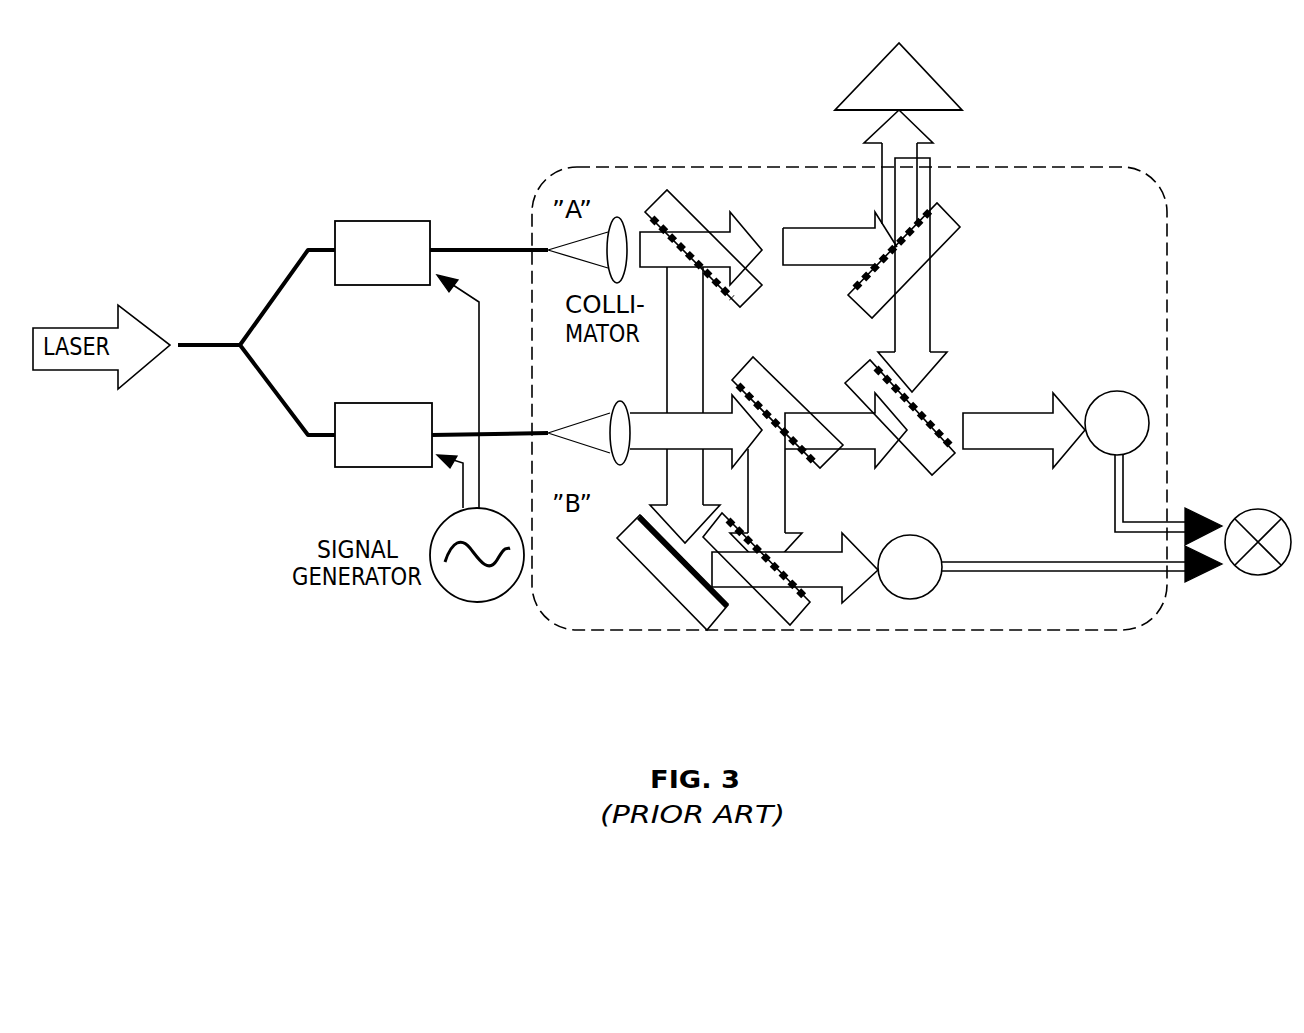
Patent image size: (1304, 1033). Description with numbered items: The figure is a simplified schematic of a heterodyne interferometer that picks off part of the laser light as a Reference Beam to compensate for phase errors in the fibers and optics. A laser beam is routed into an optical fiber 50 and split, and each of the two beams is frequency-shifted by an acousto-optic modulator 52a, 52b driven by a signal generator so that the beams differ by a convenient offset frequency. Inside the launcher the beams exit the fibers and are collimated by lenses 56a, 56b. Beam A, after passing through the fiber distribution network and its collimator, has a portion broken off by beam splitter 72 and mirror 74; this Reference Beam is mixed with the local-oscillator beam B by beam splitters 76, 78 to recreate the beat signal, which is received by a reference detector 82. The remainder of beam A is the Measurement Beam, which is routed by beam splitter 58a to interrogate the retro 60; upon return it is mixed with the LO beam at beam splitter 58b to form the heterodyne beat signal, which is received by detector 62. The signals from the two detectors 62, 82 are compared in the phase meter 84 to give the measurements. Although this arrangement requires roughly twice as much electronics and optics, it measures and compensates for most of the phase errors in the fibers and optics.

The optical fiber 50 is at (200, 343).
The acousto-optic modulator 52a is at (380, 220).
The acousto-optic modulator 52b is at (380, 402).
The lens 56a is at (615, 217).
The lens 56b is at (617, 401).
The beam splitter 58a is at (950, 216).
The beam splitter 58b is at (925, 410).
The retro 60 is at (920, 63).
The detector 62 is at (1145, 405).
The beam splitter 72 is at (680, 210).
The mirror 74 is at (676, 620).
The beam splitter 76 is at (840, 452).
The beam splitter 78 is at (770, 620).
The detector 82 is at (907, 533).
The phase meter 84 is at (1270, 575).